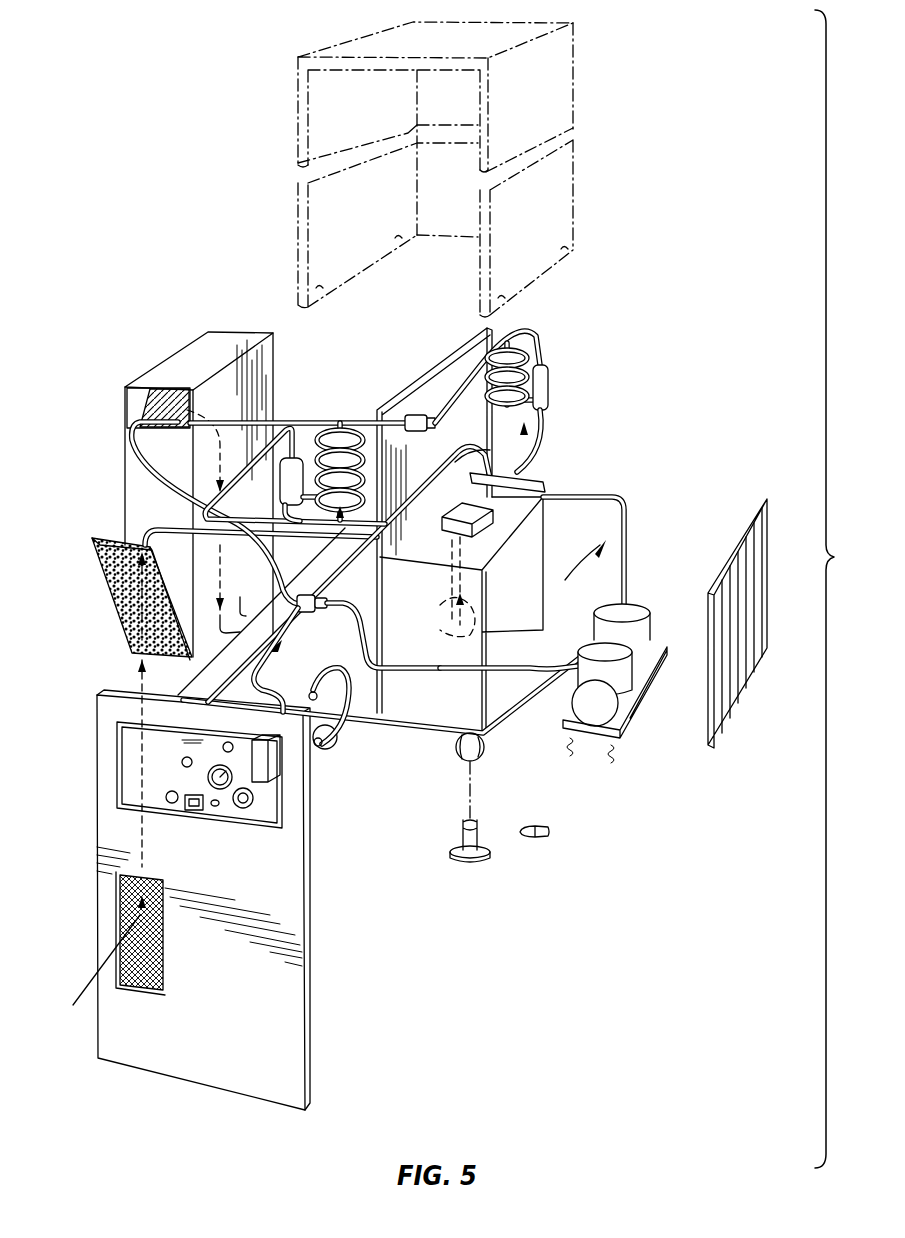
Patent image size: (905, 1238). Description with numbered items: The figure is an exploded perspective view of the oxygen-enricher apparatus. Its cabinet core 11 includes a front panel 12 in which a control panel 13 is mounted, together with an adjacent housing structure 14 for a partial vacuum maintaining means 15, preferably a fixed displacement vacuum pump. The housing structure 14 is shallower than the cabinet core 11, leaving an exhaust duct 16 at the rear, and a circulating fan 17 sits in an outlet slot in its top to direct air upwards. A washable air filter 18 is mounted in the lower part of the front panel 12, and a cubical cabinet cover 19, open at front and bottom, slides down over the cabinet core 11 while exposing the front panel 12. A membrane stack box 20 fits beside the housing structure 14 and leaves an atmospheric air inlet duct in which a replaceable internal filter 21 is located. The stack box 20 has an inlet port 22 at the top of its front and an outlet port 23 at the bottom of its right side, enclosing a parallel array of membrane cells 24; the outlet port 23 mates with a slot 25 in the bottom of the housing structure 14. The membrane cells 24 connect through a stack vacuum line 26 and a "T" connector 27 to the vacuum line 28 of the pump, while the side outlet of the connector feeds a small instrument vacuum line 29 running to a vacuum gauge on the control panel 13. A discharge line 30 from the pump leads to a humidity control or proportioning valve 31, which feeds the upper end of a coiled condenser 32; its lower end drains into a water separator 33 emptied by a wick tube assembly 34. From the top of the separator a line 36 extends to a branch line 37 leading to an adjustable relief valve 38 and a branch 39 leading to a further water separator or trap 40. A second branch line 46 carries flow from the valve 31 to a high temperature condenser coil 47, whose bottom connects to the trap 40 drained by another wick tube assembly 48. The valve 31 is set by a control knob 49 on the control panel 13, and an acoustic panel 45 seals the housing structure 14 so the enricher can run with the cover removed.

The cabinet core 11 is at (506, 702).
The front panel 12 is at (297, 859).
The control panel 13 is at (267, 812).
The housing structure 14 is at (530, 532).
The partial vacuum maintaining means 15 is at (650, 616).
The exhaust duct 16 is at (546, 466).
The circulating fan 17 is at (468, 543).
The washable air filter 18 is at (165, 933).
The cabinet cover 19 is at (575, 98).
The membrane stack box 20 is at (172, 360).
The replaceable internal filter 21 is at (90, 556).
The inlet port 22 is at (127, 393).
The outlet port 23 is at (217, 626).
The membrane cells 24 is at (160, 420).
The mating slot 25 is at (417, 678).
The stack vacuum line 26 is at (148, 478).
The "T" connector 27 is at (323, 597).
The vacuum line 28 is at (400, 652).
The instrument vacuum line 29 is at (277, 687).
The discharge line 30 is at (627, 526).
The humidity control valve 31 is at (413, 392).
The coiled condenser 32 is at (340, 428).
The water separator 33 is at (297, 455).
The wick tube assembly 34 is at (442, 527).
The line 36 is at (245, 478).
The branch line 37 is at (309, 582).
The adjustable relief valve 38 is at (240, 808).
The branch 39 is at (456, 356).
The water separator or trap 40 is at (549, 381).
The acoustic panel 45 is at (766, 536).
The second branch line 46 is at (436, 428).
The high temperature condenser coil 47 is at (541, 341).
The wick tube assembly 48 is at (539, 431).
The control knob 49 is at (175, 805).